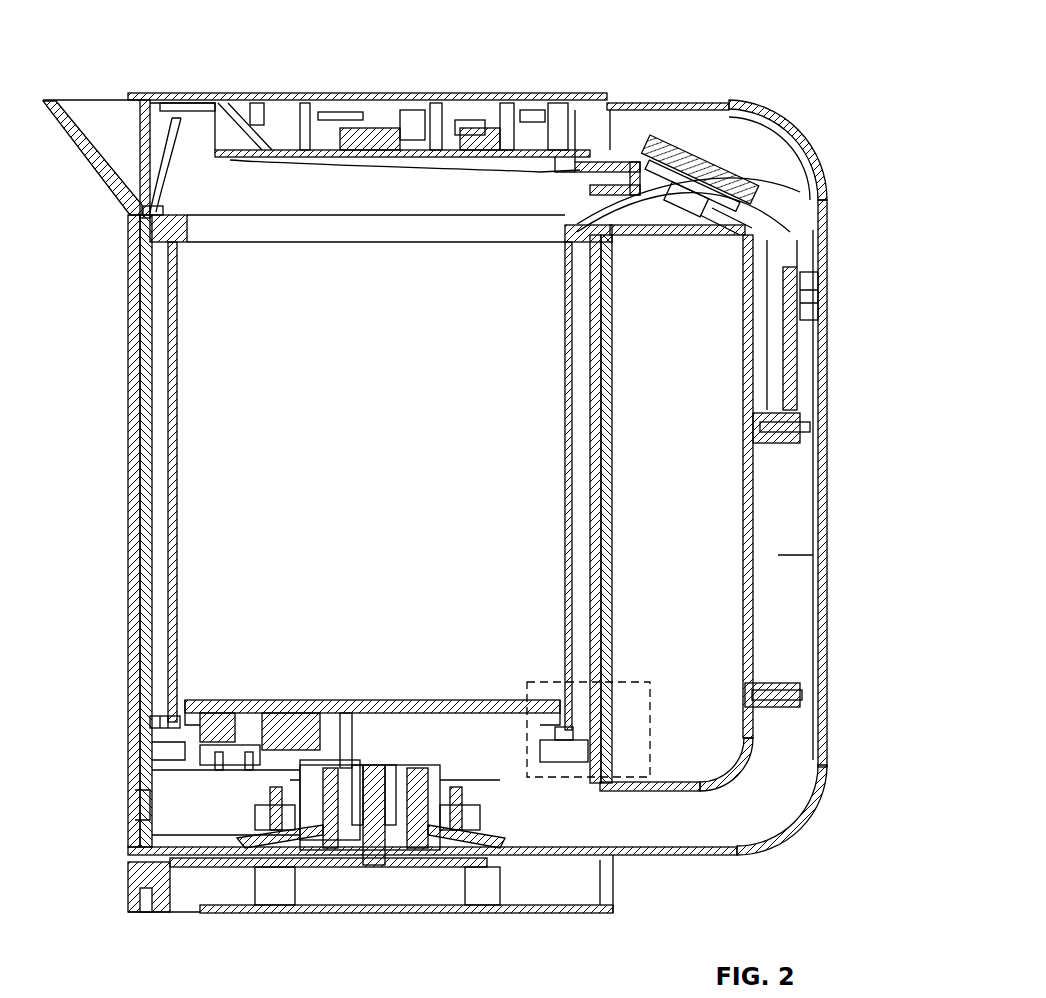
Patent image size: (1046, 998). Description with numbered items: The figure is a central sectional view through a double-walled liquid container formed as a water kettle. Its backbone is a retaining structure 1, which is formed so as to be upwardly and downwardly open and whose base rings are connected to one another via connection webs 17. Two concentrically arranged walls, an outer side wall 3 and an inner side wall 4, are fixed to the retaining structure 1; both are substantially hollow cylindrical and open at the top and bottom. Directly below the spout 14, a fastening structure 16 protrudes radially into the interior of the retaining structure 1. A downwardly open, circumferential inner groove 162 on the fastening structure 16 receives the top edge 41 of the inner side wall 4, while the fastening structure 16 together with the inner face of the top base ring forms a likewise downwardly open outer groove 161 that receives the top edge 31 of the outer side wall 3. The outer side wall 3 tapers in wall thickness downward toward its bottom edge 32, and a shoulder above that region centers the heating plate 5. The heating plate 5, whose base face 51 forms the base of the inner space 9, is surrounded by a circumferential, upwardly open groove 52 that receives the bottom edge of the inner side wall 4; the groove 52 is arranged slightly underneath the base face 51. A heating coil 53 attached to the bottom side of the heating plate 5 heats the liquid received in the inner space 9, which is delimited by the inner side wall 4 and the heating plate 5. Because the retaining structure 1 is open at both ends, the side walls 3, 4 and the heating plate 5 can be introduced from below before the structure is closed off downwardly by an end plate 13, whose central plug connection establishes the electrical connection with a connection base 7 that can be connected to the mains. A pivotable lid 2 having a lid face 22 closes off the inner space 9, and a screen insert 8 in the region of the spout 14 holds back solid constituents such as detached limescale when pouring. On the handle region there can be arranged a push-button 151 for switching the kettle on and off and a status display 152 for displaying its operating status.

The retaining structure 1 is at (120, 823).
The lid 2 is at (516, 84).
The outer side wall 3 is at (148, 485).
The inner side wall 4 is at (170, 415).
The heating plate 5 is at (218, 682).
The connection base 7 is at (118, 888).
The screen insert 8 is at (141, 155).
The inner space 9 is at (520, 582).
The end plate 13 is at (215, 850).
The spout 14 is at (106, 170).
The fastening structure 16 is at (150, 213).
The connection webs 17 is at (607, 520).
The lid face 22 is at (187, 93).
The top edge of the outer side wall 31 is at (705, 222).
The bottom edge of the outer side wall 32 is at (600, 745).
The top edge of the inner side wall 41 is at (622, 176).
The base face 51 is at (345, 705).
The groove 52 is at (160, 720).
The heating coil 53 is at (215, 720).
The push-button 151 is at (782, 128).
The status display 152 is at (820, 295).
The outer groove 161 is at (135, 245).
The inner groove 162 is at (170, 237).